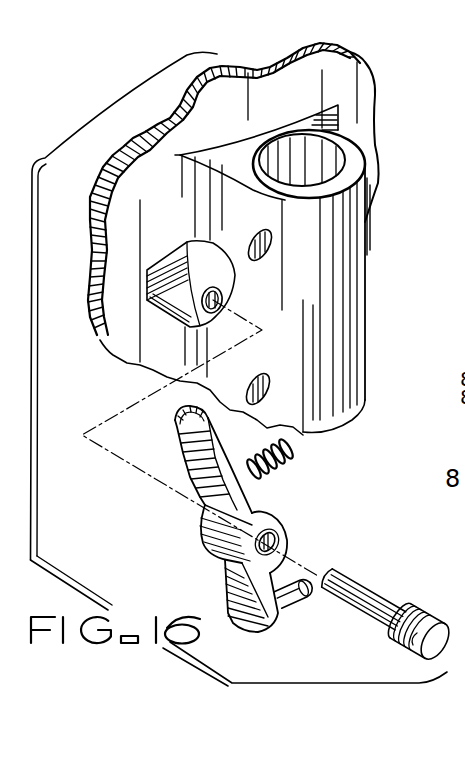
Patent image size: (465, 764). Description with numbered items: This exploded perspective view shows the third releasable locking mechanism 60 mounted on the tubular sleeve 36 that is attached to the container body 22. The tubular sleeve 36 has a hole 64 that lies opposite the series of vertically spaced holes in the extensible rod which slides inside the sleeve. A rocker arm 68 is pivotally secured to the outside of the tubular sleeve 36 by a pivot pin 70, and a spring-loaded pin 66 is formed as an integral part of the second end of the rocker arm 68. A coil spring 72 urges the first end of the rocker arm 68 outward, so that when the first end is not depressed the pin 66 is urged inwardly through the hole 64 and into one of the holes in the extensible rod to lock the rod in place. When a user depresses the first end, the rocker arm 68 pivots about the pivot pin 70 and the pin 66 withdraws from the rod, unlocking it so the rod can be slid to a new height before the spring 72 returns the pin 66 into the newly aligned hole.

The container body 22 is at (341, 63).
The third releasable locking mechanism 60 is at (403, 215).
The tubular sleeve 36 is at (354, 283).
The hole 64 is at (258, 405).
The coil spring 72 is at (272, 470).
The rocker arm 68 is at (200, 557).
The spring-loaded pin 66 is at (308, 600).
The pivot pin 70 is at (383, 574).